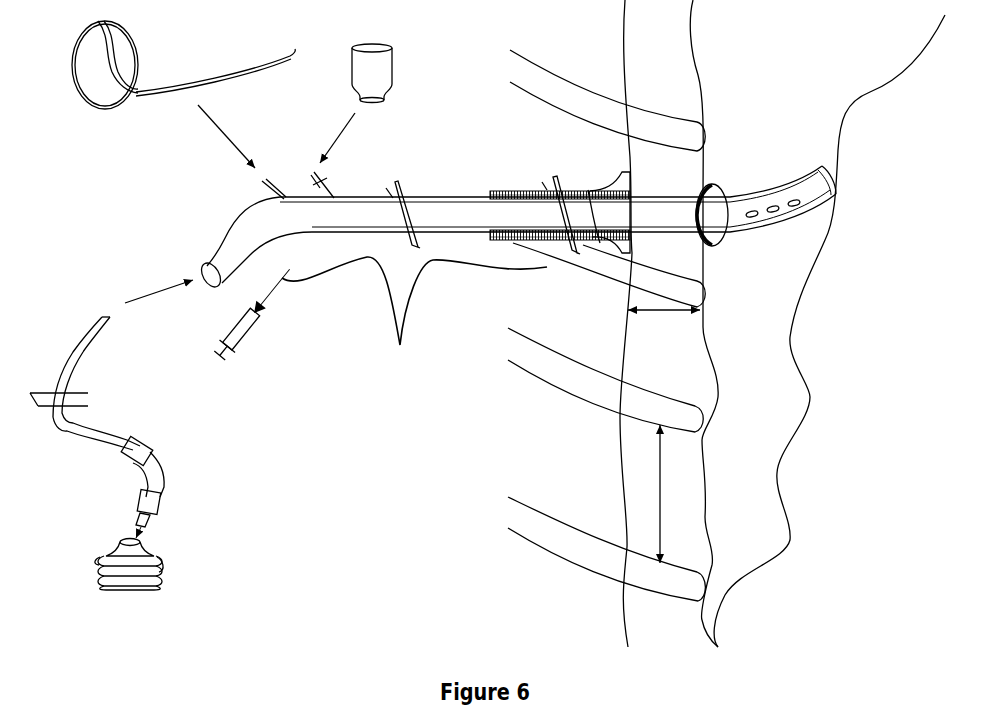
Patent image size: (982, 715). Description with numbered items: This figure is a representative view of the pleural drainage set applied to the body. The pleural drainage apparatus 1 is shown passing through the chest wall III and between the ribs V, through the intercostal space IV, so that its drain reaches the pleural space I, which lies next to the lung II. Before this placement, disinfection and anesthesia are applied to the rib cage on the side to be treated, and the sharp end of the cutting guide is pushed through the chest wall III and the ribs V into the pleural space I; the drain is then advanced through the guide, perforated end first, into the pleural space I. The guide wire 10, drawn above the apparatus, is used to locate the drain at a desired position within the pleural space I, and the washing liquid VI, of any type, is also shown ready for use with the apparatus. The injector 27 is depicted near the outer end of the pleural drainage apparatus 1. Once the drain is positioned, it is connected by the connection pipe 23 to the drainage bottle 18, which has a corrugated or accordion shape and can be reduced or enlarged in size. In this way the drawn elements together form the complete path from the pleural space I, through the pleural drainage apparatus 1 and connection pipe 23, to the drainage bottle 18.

The guide wire 10 is at (138, 54).
The washing liquid VI is at (380, 72).
The pleural drainage apparatus 1 is at (414, 311).
The injector 27 is at (240, 338).
The connection pipe 23 is at (88, 437).
The drainage bottle 18 is at (137, 587).
The pleural space I is at (773, 58).
The lung II is at (887, 290).
The chest wall III is at (667, 313).
The intercostal space IV is at (660, 483).
The rib V is at (582, 387).